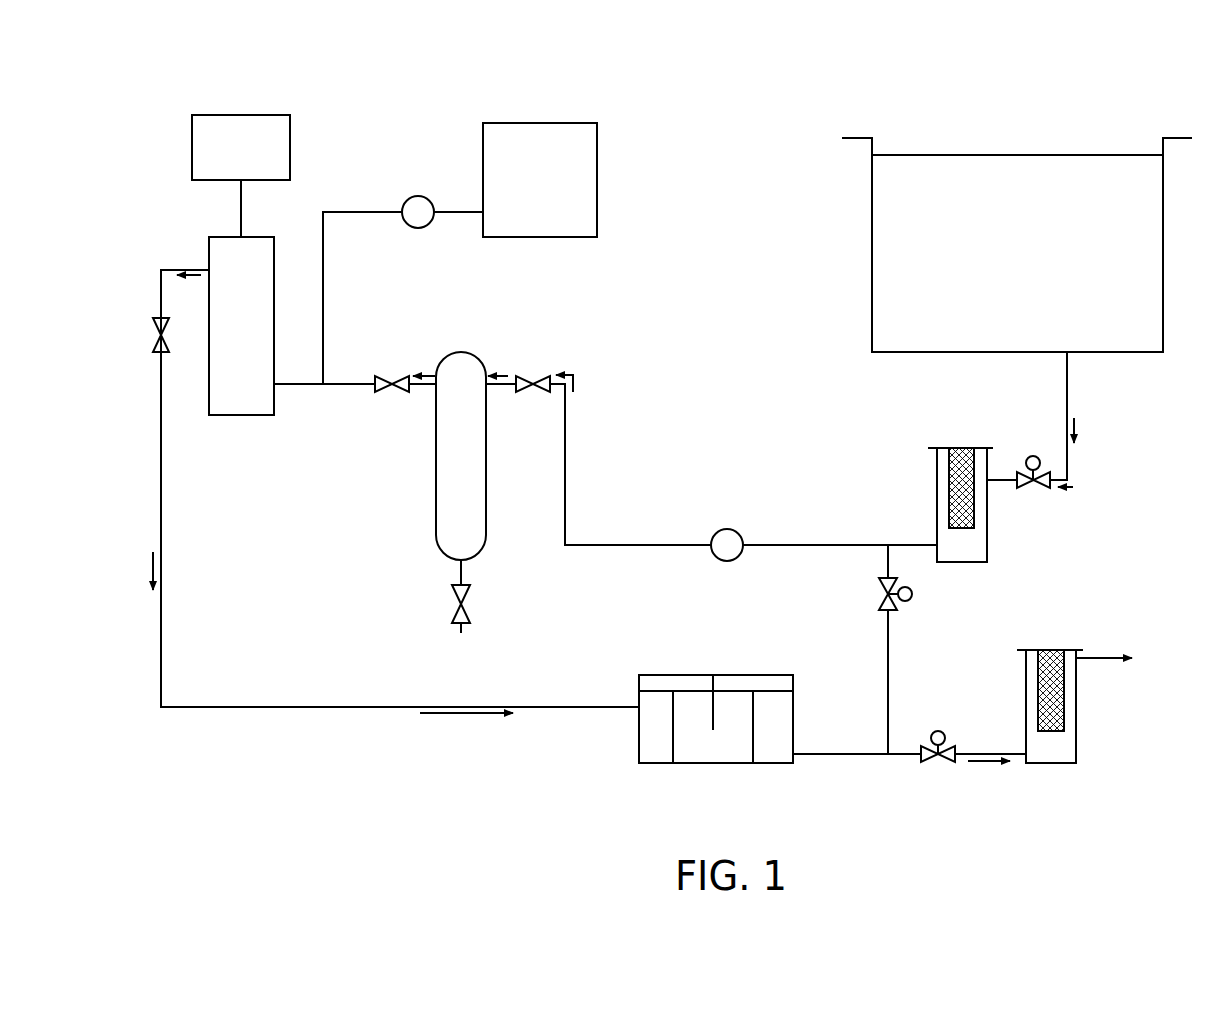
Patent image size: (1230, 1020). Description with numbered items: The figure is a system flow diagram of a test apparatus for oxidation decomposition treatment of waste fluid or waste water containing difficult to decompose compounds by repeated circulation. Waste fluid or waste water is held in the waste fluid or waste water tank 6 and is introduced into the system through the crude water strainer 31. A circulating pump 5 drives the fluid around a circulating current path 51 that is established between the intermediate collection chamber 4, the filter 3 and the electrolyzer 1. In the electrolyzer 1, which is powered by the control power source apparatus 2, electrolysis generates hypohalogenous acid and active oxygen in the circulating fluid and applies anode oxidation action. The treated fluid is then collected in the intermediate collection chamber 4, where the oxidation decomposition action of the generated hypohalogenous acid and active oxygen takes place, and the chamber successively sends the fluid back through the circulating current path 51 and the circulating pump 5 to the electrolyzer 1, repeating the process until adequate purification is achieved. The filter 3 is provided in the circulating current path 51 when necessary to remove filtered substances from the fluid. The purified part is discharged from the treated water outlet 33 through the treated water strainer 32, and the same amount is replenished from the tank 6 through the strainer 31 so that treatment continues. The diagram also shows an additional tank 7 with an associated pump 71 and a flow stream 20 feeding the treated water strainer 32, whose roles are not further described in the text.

The electrolyzer 1 is at (237, 415).
The control power source apparatus 2 is at (200, 115).
The filter 3 is at (436, 463).
The intermediate collection chamber 4 is at (665, 675).
The circulating pump 5 is at (730, 529).
The waste fluid or waste water tank 6 is at (987, 155).
The tank TK-3 7 is at (517, 122).
The pump 71 is at (411, 197).
The crude water strainer 31 is at (955, 448).
The treated water strainer 32 is at (1046, 650).
The treated water outlet 33 is at (1117, 673).
The feed stream 20 is at (989, 776).
The circulating current path 51 is at (396, 507).